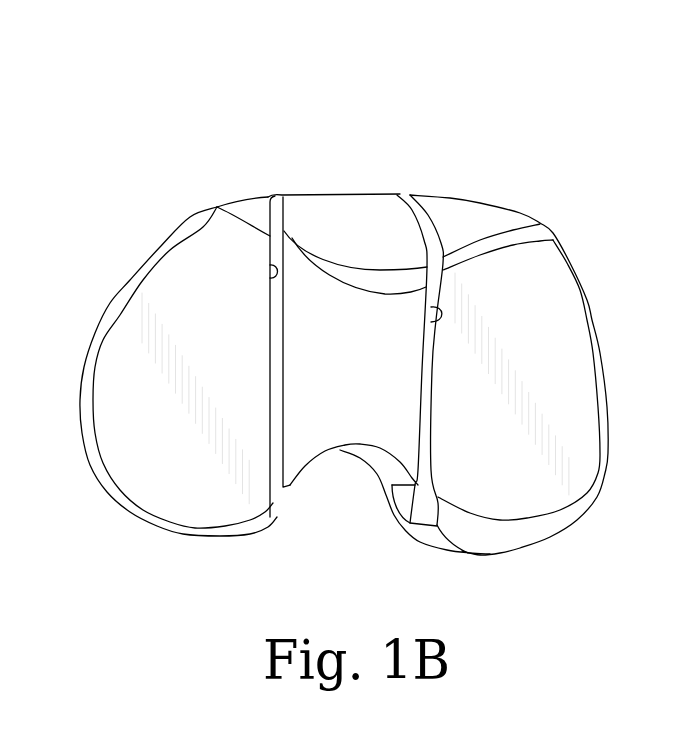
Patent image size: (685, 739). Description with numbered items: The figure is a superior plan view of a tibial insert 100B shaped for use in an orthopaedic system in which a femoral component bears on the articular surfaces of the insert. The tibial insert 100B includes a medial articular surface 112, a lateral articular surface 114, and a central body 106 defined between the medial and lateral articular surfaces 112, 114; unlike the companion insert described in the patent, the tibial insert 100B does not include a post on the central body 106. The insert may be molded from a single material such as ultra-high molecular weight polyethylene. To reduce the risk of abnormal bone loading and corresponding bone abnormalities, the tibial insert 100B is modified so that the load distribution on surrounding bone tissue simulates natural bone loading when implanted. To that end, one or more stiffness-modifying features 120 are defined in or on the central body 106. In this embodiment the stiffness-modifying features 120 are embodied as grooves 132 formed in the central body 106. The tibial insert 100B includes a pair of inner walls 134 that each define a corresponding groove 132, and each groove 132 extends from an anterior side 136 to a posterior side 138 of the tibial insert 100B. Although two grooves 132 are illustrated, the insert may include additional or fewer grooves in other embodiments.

The tibial insert 100B is at (526, 163).
The central body 106 is at (357, 227).
The medial articular surface 112 is at (113, 407).
The lateral articular surface 114 is at (557, 330).
The stiffness-modifying features 120 is at (252, 402).
The groove 132 is at (268, 302).
The inner walls 134 is at (270, 270).
The anterior side 136 is at (261, 172).
The posterior side 138 is at (327, 520).